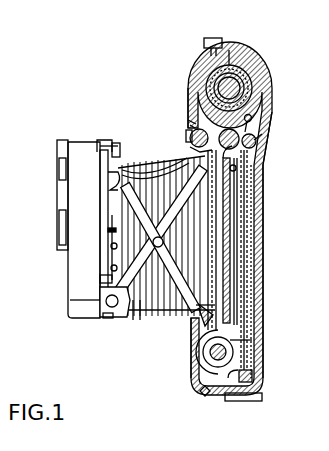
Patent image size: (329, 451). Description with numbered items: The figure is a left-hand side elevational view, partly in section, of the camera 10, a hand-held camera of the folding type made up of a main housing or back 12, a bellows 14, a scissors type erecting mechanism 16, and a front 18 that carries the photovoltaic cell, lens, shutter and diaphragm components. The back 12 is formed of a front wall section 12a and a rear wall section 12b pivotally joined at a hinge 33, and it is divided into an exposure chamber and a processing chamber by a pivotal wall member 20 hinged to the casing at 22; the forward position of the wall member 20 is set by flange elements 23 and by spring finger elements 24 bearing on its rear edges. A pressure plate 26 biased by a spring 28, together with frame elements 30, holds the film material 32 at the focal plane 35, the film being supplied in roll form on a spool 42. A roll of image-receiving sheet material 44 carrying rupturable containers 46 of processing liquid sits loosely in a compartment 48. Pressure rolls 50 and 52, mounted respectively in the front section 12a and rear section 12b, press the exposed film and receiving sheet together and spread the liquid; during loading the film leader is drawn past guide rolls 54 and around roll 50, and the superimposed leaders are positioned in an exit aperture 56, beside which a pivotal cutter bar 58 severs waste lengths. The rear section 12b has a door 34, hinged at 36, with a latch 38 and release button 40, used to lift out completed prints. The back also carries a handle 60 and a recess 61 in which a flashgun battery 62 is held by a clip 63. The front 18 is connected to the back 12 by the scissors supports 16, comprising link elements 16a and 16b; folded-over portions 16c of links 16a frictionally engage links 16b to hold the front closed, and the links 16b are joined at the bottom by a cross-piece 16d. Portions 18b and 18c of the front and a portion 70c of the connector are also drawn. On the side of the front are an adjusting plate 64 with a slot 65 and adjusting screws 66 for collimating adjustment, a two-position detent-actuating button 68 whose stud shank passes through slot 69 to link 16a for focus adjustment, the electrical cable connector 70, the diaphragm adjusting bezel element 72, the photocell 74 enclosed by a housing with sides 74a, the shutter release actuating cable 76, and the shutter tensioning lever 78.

The camera 10 is at (273, 104).
The main housing or back 12 is at (258, 70).
The front wall section 12a is at (196, 70).
The rear wall section 12b is at (266, 148).
The bellows 14 is at (150, 308).
The scissors type erecting mechanism 16 is at (100, 213).
The link element 16a is at (108, 203).
The link element 16b is at (122, 278).
The folded-over portion 16c is at (182, 306).
The cross-piece 16d is at (132, 318).
The camera front 18 is at (68, 301).
The frame upper tab 18b is at (107, 140).
The frame lower portion 18c is at (100, 290).
The pivotal wall member 20 is at (240, 318).
The hinge connection 22 is at (255, 383).
The flange elements 23 is at (244, 330).
The spring finger elements 24 is at (248, 254).
The pressure plate 26 is at (232, 242).
The spring 28 is at (245, 200).
The frame elements 30 is at (228, 172).
The film material 32 is at (257, 294).
The hinge 33 is at (230, 48).
The door 34 is at (258, 272).
The focal plane 35 is at (217, 222).
The door hinge 36 is at (255, 172).
The latch 38 is at (252, 378).
The release button 40 is at (249, 343).
The spool 42 is at (244, 356).
The image-receiving sheet material 44 is at (222, 86).
The rupturable containers 46 is at (251, 120).
The compartment or sub-section 48 is at (250, 82).
The pressure roll 50 is at (265, 133).
The pressure roll 52 is at (257, 141).
The guide rolls 54 is at (190, 140).
The exit aperture 56 is at (202, 388).
The pivotal cutter bar 58 is at (240, 394).
The handle 60 is at (215, 41).
The recess 61 is at (187, 136).
The battery 62 is at (192, 128).
The clip 63 is at (189, 121).
The adjusting plate 64 is at (110, 270).
The slot 65 is at (110, 232).
The adjusting screws 66 is at (102, 245).
The detent-actuating button 68 is at (117, 146).
The slot 69 is at (97, 146).
The electrical cable connector 70 is at (186, 161).
The link end 70c is at (191, 140).
The diaphragm adjusting bezel element 72 is at (60, 219).
The photocell 74 is at (52, 141).
The sides of photocell housing 74a is at (59, 166).
The shutter release actuating cable 76 is at (138, 314).
The shutter tensioning lever 78 is at (105, 314).